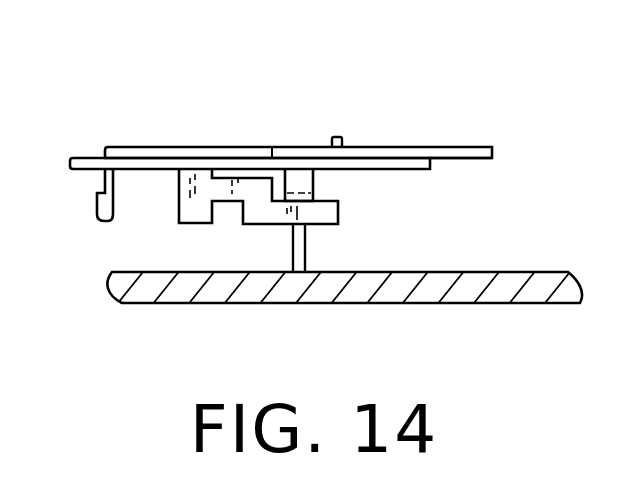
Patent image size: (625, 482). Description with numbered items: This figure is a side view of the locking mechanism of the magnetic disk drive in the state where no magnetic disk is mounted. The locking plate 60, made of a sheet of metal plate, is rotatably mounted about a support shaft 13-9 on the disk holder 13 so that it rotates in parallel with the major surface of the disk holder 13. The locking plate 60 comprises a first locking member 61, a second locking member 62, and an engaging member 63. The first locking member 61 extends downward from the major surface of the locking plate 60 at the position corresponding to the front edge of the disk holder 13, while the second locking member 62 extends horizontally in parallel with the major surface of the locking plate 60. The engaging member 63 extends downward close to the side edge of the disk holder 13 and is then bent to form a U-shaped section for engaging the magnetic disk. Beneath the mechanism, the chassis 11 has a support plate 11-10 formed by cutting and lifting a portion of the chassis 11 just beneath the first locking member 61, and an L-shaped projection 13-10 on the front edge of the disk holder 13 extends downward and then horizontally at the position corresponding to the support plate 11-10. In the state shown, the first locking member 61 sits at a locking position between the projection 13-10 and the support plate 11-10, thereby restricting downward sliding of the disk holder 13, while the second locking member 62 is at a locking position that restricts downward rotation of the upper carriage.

The locking plate 60 is at (278, 147).
The disk holder 13 is at (88, 163).
The second locking member 62 is at (462, 147).
The support shaft 13-9 is at (340, 136).
The engaging member 63 is at (100, 223).
The first locking member 61 is at (292, 225).
The L-shaped projection 13-10 is at (313, 182).
The support plate 11-10 is at (307, 250).
The chassis 11 is at (520, 272).